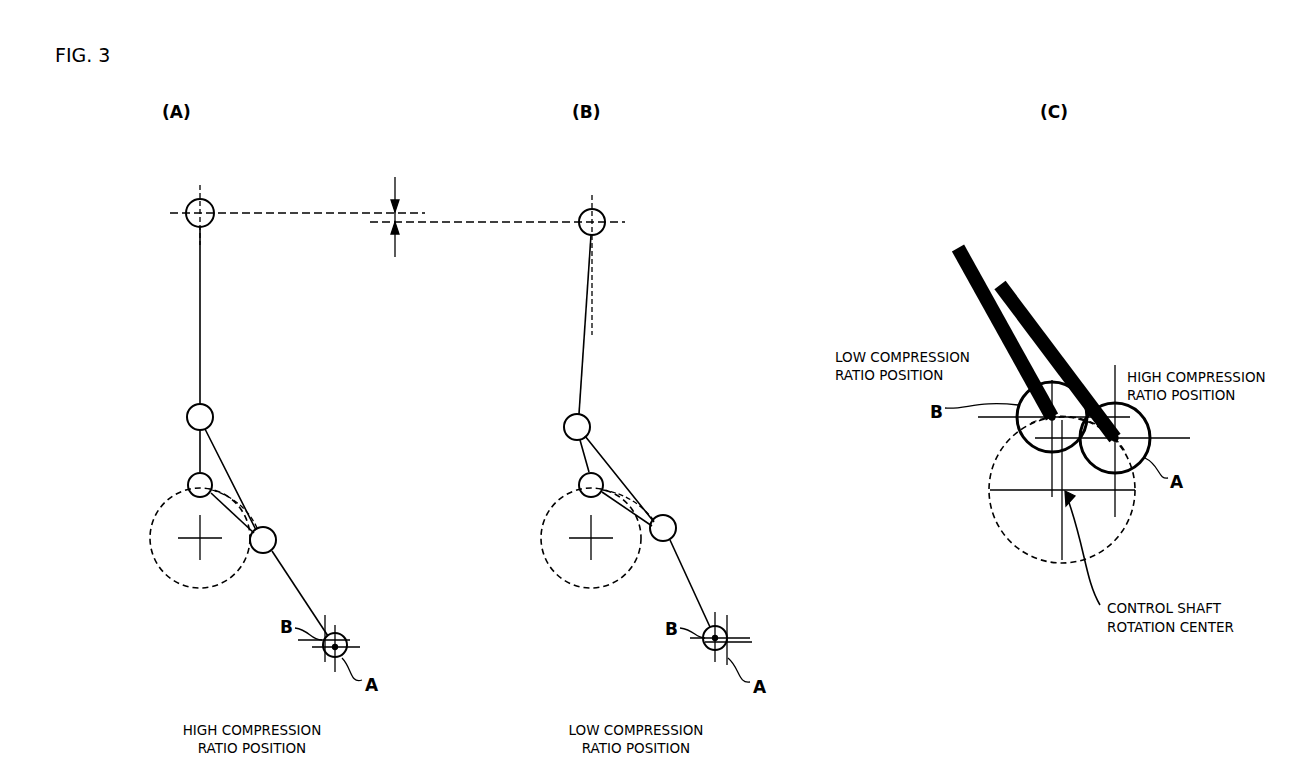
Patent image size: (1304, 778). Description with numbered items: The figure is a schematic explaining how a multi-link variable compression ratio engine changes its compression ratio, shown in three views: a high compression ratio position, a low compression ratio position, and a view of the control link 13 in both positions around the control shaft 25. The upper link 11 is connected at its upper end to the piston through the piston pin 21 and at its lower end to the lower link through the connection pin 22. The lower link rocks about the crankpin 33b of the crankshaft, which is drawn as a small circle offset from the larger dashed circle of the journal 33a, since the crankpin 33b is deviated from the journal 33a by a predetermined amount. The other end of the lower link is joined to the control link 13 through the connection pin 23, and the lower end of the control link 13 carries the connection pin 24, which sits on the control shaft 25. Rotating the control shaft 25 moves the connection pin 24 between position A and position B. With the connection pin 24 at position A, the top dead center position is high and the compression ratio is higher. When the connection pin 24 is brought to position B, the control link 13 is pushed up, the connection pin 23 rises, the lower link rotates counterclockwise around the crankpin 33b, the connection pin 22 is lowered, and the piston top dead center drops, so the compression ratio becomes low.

The upper link 11 is at (200, 332).
The control link 13 is at (298, 583).
The piston pin 21 is at (190, 208).
The connection pin 22 is at (208, 415).
The connection pin 23 is at (272, 534).
The connection pin 24 is at (340, 634).
The control shaft 25 is at (1130, 520).
The journal 33a is at (160, 576).
The crankpin 33b is at (196, 480).